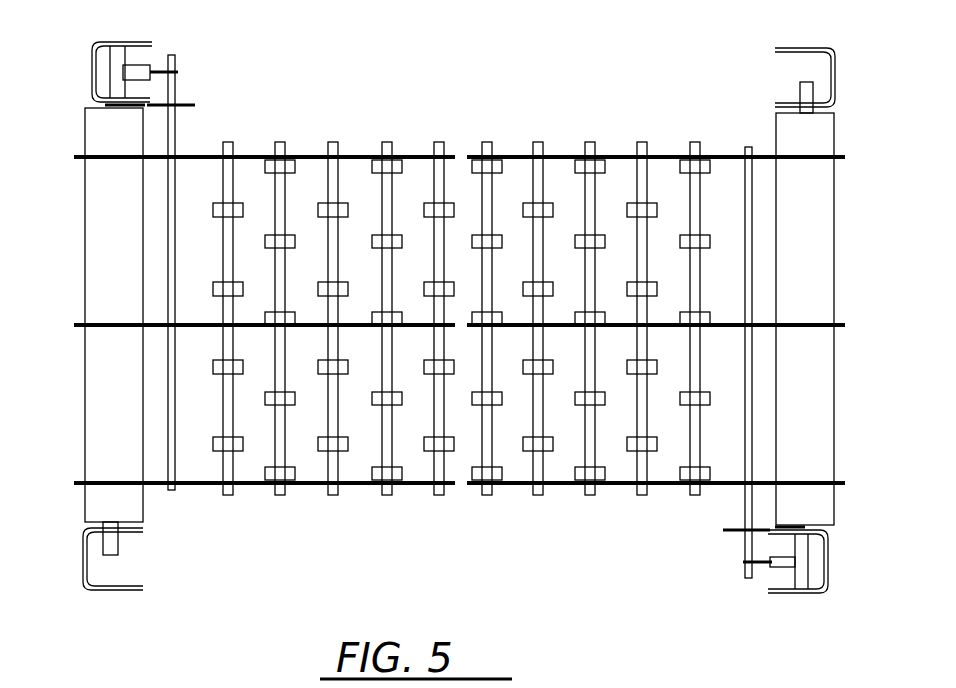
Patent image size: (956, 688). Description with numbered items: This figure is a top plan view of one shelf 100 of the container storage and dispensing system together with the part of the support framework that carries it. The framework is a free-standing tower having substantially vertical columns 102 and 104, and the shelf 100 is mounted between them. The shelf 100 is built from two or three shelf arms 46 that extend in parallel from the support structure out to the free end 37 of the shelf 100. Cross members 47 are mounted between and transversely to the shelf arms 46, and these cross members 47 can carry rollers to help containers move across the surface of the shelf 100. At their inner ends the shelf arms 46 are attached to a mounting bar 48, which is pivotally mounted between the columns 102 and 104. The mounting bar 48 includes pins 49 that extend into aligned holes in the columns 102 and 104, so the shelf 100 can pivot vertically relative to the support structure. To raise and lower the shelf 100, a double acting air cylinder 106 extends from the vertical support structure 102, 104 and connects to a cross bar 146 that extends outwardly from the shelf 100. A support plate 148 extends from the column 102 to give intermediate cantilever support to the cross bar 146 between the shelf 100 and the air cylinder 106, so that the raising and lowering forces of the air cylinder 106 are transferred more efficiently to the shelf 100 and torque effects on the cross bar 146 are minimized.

The free end 37 is at (467, 157).
The shelf arms 46 is at (303, 155).
The cross members 47 is at (385, 193).
The mounting bar 48 is at (100, 244).
The pins 49 is at (800, 88).
The shelf 100 is at (301, 488).
The vertical column 102 is at (128, 30).
The vertical column 104 is at (782, 48).
The double acting air cylinder 106 is at (147, 65).
The cross bar 146 is at (178, 60).
The support plate 148 is at (190, 104).